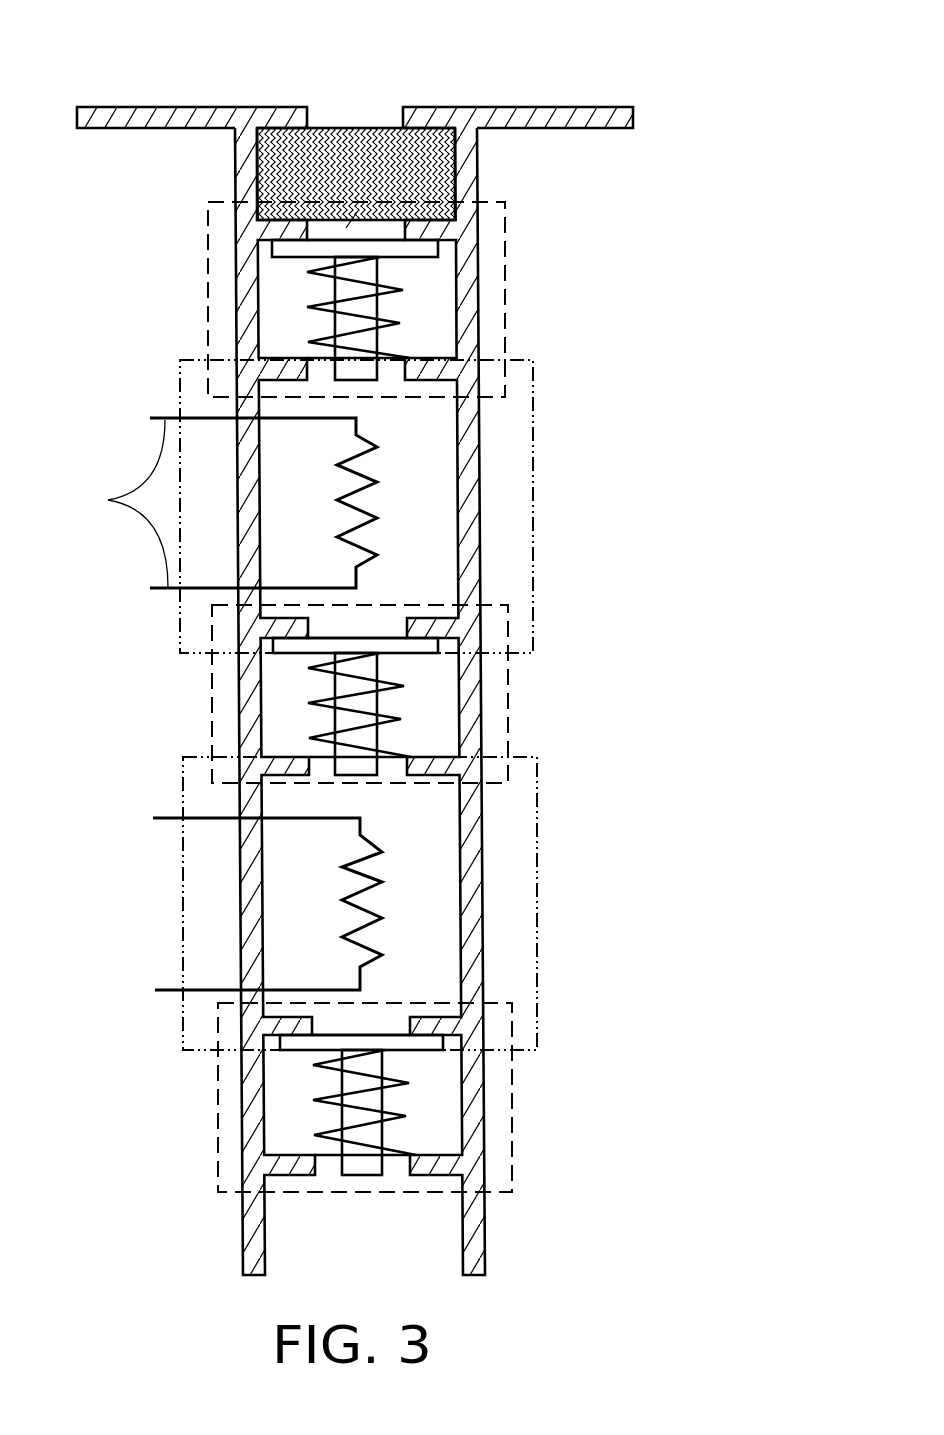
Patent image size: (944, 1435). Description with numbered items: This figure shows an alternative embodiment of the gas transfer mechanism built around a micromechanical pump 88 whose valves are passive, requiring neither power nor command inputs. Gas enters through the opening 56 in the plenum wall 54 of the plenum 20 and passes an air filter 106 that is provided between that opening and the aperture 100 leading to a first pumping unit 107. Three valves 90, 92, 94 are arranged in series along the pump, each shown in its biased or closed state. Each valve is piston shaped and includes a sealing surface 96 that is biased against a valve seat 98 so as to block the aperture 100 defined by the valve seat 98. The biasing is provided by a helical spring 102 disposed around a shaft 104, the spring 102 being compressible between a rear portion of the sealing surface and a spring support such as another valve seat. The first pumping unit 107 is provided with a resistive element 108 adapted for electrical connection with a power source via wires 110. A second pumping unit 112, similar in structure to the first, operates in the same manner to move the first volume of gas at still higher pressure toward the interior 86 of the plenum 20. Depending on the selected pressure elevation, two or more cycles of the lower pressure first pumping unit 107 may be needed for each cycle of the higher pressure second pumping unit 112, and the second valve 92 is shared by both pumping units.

The plenum 20 is at (632, 98).
The plenum wall 54 is at (483, 107).
The opening 56 is at (347, 110).
The interior 86 is at (387, 1250).
The micromechanical pump 88 is at (614, 370).
The first valve 90 is at (208, 224).
The second valve 92 is at (205, 620).
The third valve 94 is at (207, 998).
The sealing surface 96 is at (413, 258).
The valve seat 98 is at (440, 247).
The aperture 100 is at (257, 160).
The helical spring 102 is at (393, 322).
The shaft 104 is at (330, 287).
The air filter 106 is at (453, 150).
The first pumping unit 107 is at (178, 365).
The resistive element 108 is at (378, 447).
The wires 110 is at (108, 500).
The second pumping unit 112 is at (175, 760).